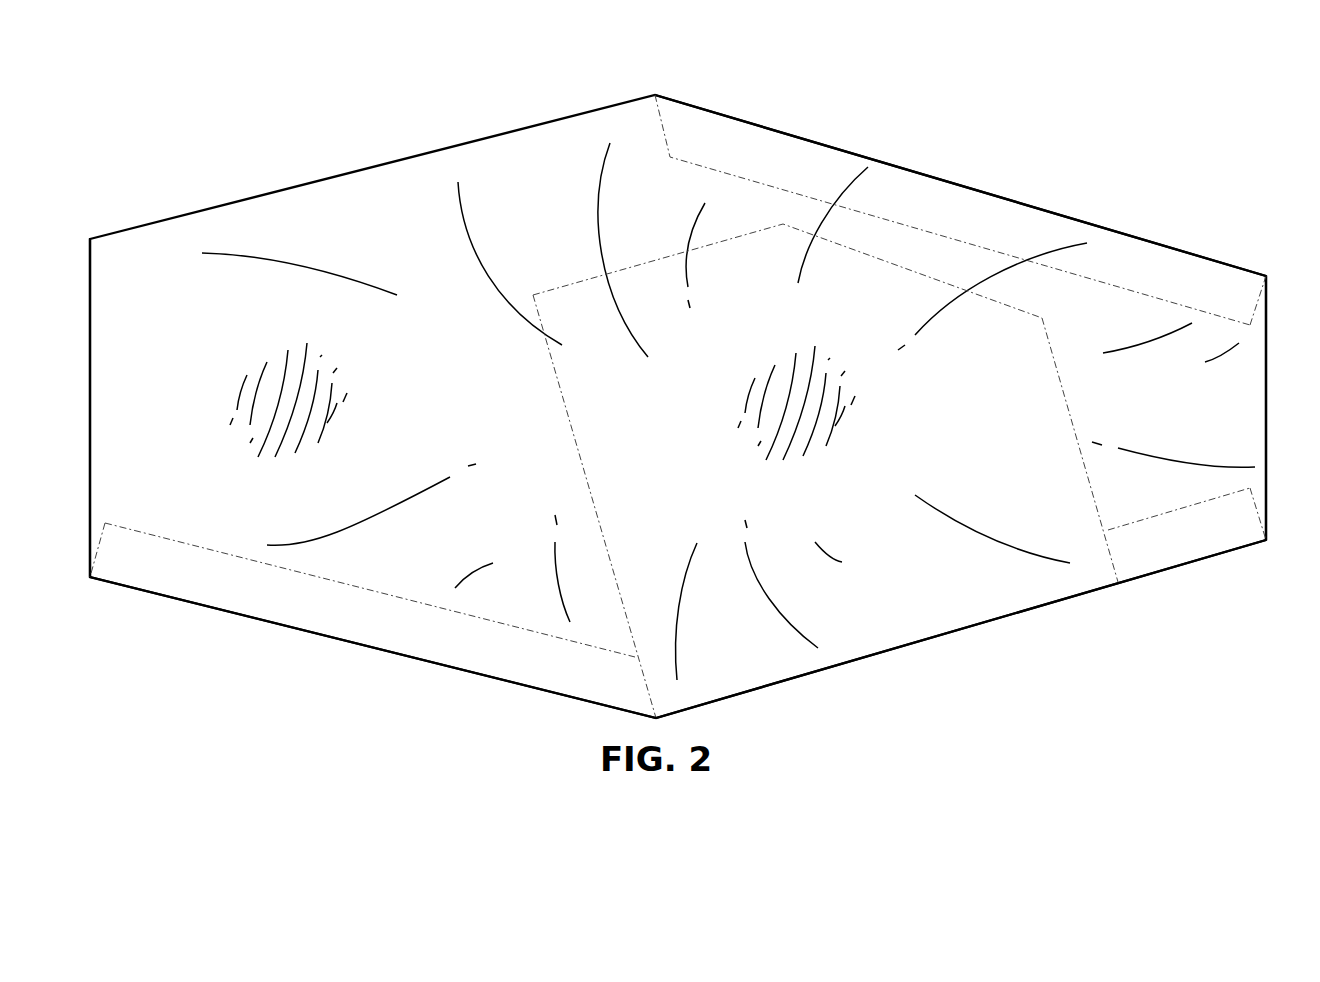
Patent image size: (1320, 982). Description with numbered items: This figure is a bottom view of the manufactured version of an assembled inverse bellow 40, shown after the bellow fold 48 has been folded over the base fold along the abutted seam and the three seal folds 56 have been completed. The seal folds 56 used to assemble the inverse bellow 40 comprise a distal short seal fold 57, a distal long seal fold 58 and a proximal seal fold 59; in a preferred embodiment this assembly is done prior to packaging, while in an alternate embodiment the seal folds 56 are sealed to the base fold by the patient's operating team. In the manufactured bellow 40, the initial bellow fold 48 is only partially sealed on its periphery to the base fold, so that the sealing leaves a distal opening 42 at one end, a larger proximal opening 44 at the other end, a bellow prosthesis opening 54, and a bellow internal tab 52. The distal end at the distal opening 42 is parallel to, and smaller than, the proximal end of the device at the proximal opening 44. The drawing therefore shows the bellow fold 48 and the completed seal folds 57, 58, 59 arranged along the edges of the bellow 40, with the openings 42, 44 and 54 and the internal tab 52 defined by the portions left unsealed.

The inverse bellow 40 is at (267, 93).
The distal opening 42 is at (1274, 561).
The proximal opening 44 is at (108, 219).
The bellow fold 48 is at (424, 423).
The bellow internal tab 52 is at (565, 292).
The bellow prosthesis opening 54 is at (1126, 594).
The seal folds 56 is at (1214, 560).
The distal short seal fold 57 is at (1167, 560).
The distal long seal fold 58 is at (1141, 246).
The proximal seal fold 59 is at (372, 640).